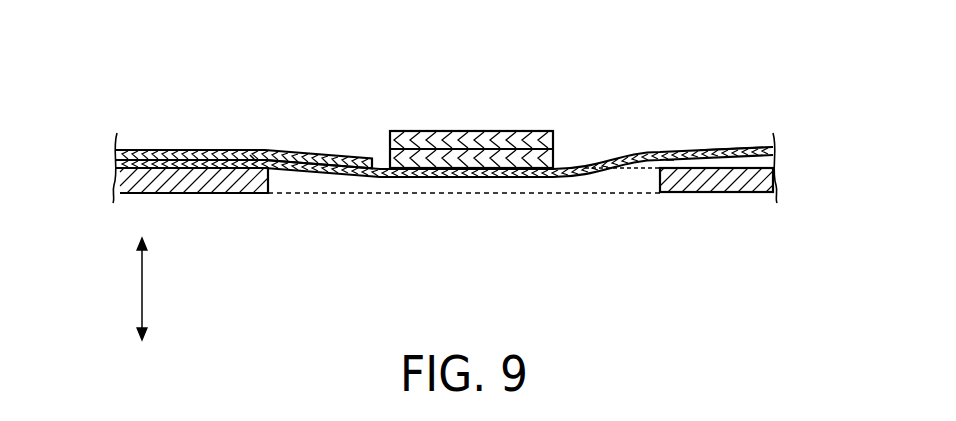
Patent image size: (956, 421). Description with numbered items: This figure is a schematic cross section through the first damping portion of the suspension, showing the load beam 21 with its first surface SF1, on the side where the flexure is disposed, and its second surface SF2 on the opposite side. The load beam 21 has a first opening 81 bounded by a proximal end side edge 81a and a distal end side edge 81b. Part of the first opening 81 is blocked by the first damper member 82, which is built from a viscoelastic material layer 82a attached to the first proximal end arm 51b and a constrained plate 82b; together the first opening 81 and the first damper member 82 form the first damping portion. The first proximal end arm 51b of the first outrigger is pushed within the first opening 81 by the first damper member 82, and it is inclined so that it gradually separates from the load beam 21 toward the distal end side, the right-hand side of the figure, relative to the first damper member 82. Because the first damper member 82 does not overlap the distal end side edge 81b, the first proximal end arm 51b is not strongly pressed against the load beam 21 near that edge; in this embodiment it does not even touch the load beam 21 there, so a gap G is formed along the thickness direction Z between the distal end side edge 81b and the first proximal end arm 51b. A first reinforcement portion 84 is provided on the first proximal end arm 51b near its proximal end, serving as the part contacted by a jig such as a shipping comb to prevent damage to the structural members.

The first opening 81 is at (340, 195).
The first reinforcement portion 84 is at (132, 148).
The first surface SF1 is at (190, 165).
The second surface SF2 is at (185, 196).
The proximal end side edge 81a is at (253, 159).
The distal end side edge 81b is at (672, 162).
The first damper member 82 is at (471, 94).
The viscoelastic material layer 82a is at (453, 130).
The constrained plate 82b is at (419, 71).
The first proximal end arm 51b is at (734, 148).
The gap G is at (653, 170).
The load beam 21 is at (743, 187).
The thickness direction Z is at (141, 290).